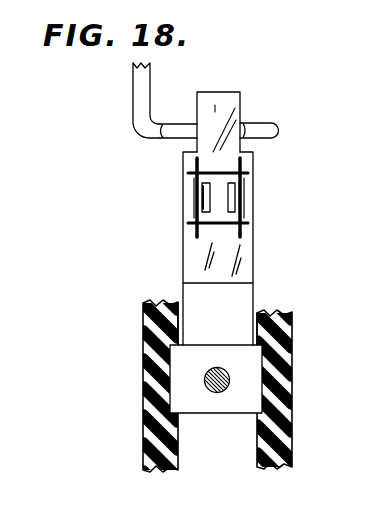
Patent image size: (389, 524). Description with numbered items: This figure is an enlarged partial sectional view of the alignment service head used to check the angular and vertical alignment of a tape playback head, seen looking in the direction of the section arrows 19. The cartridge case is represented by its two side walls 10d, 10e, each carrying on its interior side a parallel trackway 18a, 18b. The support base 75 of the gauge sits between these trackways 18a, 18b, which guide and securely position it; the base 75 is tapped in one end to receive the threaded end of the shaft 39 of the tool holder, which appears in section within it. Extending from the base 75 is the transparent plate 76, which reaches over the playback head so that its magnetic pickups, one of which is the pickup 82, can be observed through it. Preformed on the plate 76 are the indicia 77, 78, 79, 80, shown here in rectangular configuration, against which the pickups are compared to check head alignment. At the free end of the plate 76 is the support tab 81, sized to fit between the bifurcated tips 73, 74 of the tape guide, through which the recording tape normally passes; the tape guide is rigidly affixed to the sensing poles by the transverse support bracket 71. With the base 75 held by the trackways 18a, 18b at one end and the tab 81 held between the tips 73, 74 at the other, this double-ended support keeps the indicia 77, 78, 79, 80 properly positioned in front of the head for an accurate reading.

The side wall 10d is at (292, 334).
The side wall 10e is at (143, 361).
The trackway 18a is at (278, 396).
The trackway 18b is at (166, 393).
The section line 19 is at (160, 63).
The shaft 39 is at (227, 379).
The support bracket 71 is at (133, 93).
The bifurcated tip 73 is at (172, 142).
The bifurcated tip 74 is at (276, 127).
The support base 75 is at (218, 414).
The transparent plate 76 is at (254, 262).
The indicia 77 is at (241, 172).
The indicia 78 is at (254, 213).
The indicia 79 is at (205, 245).
The indicia 80 is at (202, 208).
The support tab 81 is at (240, 96).
The magnetic pickup 82 is at (202, 196).